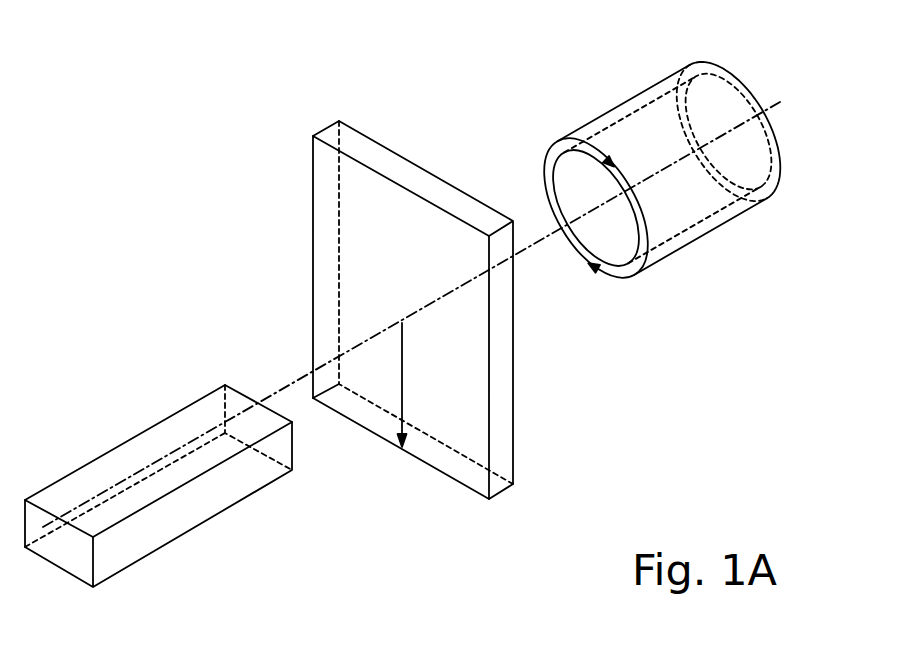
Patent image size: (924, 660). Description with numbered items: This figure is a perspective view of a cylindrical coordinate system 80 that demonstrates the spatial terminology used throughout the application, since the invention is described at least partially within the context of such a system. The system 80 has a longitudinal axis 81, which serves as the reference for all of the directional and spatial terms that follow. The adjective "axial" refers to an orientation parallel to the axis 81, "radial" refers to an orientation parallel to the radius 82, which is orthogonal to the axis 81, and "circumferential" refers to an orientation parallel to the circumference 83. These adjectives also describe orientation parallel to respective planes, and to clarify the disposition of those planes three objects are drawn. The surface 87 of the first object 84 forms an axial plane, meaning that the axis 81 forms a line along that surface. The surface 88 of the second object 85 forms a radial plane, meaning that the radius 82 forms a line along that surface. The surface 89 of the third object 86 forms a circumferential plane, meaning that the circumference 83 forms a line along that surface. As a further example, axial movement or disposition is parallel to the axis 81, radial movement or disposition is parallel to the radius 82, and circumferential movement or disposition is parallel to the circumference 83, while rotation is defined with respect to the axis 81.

The cylindrical coordinate system 80 is at (262, 178).
The longitudinal axis 81 is at (772, 103).
The radius 82 is at (402, 378).
The circumference 83 is at (543, 170).
The object 84 is at (120, 572).
The object 85 is at (530, 494).
The object 86 is at (700, 251).
The surface 87 is at (115, 467).
The surface 88 is at (330, 263).
The surface 89 is at (627, 103).